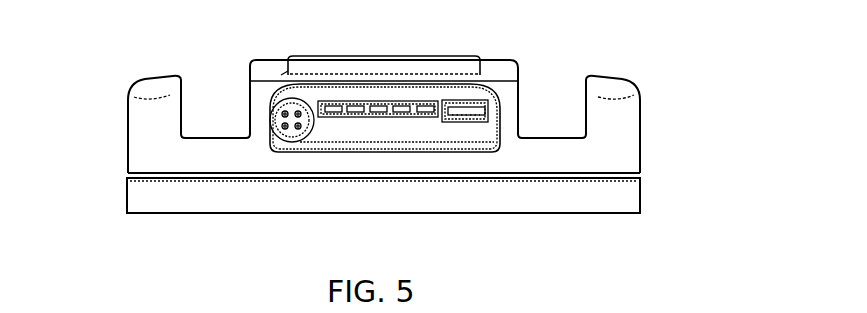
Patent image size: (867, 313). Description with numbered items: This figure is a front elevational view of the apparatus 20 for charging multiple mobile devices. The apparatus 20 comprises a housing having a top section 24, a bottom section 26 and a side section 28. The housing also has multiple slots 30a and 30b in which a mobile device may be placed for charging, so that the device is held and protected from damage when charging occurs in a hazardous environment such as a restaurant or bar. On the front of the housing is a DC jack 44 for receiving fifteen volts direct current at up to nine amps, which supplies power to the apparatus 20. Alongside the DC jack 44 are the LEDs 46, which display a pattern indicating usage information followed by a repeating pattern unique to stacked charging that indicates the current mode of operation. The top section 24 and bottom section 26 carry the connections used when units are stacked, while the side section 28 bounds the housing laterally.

The apparatus for charging multiple mobile devices 20 is at (103, 73).
The top section 24 is at (440, 54).
The bottom section 26 is at (444, 218).
The side section 28 is at (118, 136).
The slot 30a is at (215, 84).
The slot 30b is at (554, 84).
The DC jack 44 is at (281, 98).
The LEDs 46 is at (361, 94).